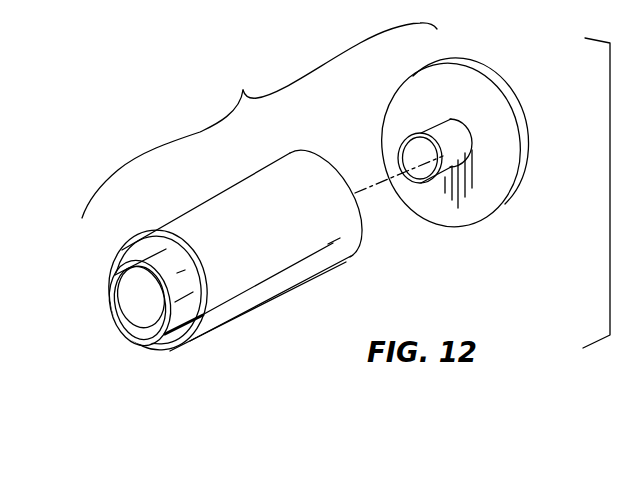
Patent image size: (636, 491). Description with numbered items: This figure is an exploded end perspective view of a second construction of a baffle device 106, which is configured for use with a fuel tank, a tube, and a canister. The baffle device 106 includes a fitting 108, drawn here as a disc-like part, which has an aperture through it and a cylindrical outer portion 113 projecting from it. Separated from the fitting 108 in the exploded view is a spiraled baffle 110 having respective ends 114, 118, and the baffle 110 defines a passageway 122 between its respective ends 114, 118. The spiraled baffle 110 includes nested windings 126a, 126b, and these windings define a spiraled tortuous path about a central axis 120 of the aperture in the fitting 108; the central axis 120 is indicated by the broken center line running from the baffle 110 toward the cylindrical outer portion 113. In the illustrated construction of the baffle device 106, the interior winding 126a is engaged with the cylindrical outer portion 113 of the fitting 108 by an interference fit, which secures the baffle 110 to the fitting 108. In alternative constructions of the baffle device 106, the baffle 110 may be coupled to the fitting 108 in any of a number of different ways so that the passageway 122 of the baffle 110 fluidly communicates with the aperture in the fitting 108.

The baffle device 106 is at (259, 120).
The fitting 108 is at (496, 48).
The spiraled baffle 110 is at (276, 276).
The cylindrical outer portion 113 is at (458, 142).
The end 114 is at (124, 328).
The end 118 is at (359, 228).
The central axis 120 is at (377, 180).
The passageway 122 is at (137, 302).
The interior winding 126a is at (175, 238).
The winding 126b is at (192, 247).